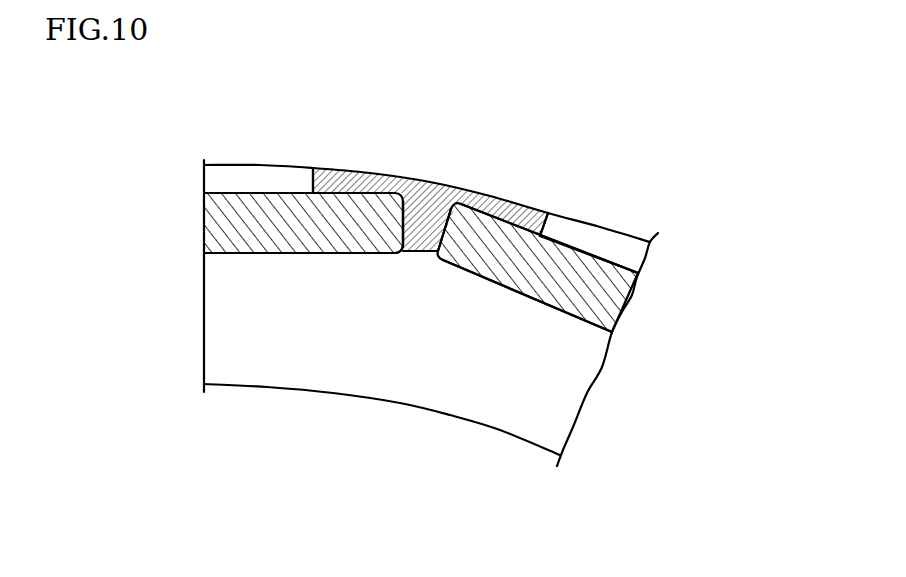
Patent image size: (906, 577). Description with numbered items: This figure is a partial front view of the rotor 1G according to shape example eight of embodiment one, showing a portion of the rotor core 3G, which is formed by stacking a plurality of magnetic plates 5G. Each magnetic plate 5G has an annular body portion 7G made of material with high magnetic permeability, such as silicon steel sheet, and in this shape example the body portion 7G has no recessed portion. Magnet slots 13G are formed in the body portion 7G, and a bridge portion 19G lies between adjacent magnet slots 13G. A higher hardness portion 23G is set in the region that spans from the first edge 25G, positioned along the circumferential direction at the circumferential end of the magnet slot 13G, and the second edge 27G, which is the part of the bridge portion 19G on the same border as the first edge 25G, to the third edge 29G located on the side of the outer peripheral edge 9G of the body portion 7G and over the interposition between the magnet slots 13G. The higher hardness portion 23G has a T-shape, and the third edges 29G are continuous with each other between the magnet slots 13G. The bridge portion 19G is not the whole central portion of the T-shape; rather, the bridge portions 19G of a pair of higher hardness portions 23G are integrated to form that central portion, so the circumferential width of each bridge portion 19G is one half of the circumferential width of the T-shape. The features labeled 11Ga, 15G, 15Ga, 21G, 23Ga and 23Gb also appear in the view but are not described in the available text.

The rotor 1G is at (497, 145).
The rotor core 3G is at (533, 188).
The magnetic plate 5G is at (606, 377).
The body portion 7G is at (560, 408).
The outer peripheral edge 9G is at (292, 190).
The outer surface of cover 11Ga is at (314, 180).
The magnet slot 13G is at (250, 244).
The permanent magnet 15G is at (227, 222).
The side surface of permanent magnet 15Ga is at (403, 214).
The bridge portion 19G is at (447, 245).
The cover plate 21G is at (232, 177).
The higher hardness portion 23G is at (398, 188).
The step portion of core member 23Ga is at (308, 188).
The bottom surface of core member 23Gb is at (420, 252).
The first edge 25G is at (345, 195).
The second edge 27G is at (395, 235).
The third edge 29G is at (408, 206).